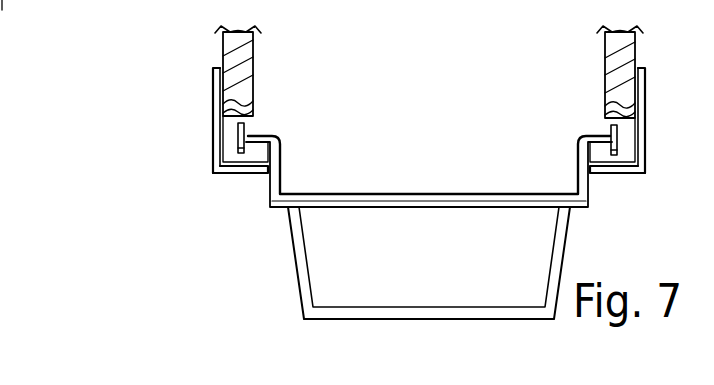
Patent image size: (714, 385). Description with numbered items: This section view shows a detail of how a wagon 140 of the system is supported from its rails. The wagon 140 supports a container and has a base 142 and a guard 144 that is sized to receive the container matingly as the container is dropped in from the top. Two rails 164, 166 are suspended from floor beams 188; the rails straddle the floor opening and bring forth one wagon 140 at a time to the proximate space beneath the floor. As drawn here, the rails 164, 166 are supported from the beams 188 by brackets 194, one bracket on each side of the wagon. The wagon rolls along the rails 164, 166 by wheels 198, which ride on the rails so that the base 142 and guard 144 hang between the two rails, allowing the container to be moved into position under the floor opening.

The wagon 140 is at (262, 271).
The base 142 is at (398, 306).
The guard 144 is at (397, 209).
The rail 164 is at (242, 174).
The rail 166 is at (610, 175).
The floor beam 188 is at (254, 92).
The bracket 194 is at (211, 120).
The wheel 198 is at (247, 132).